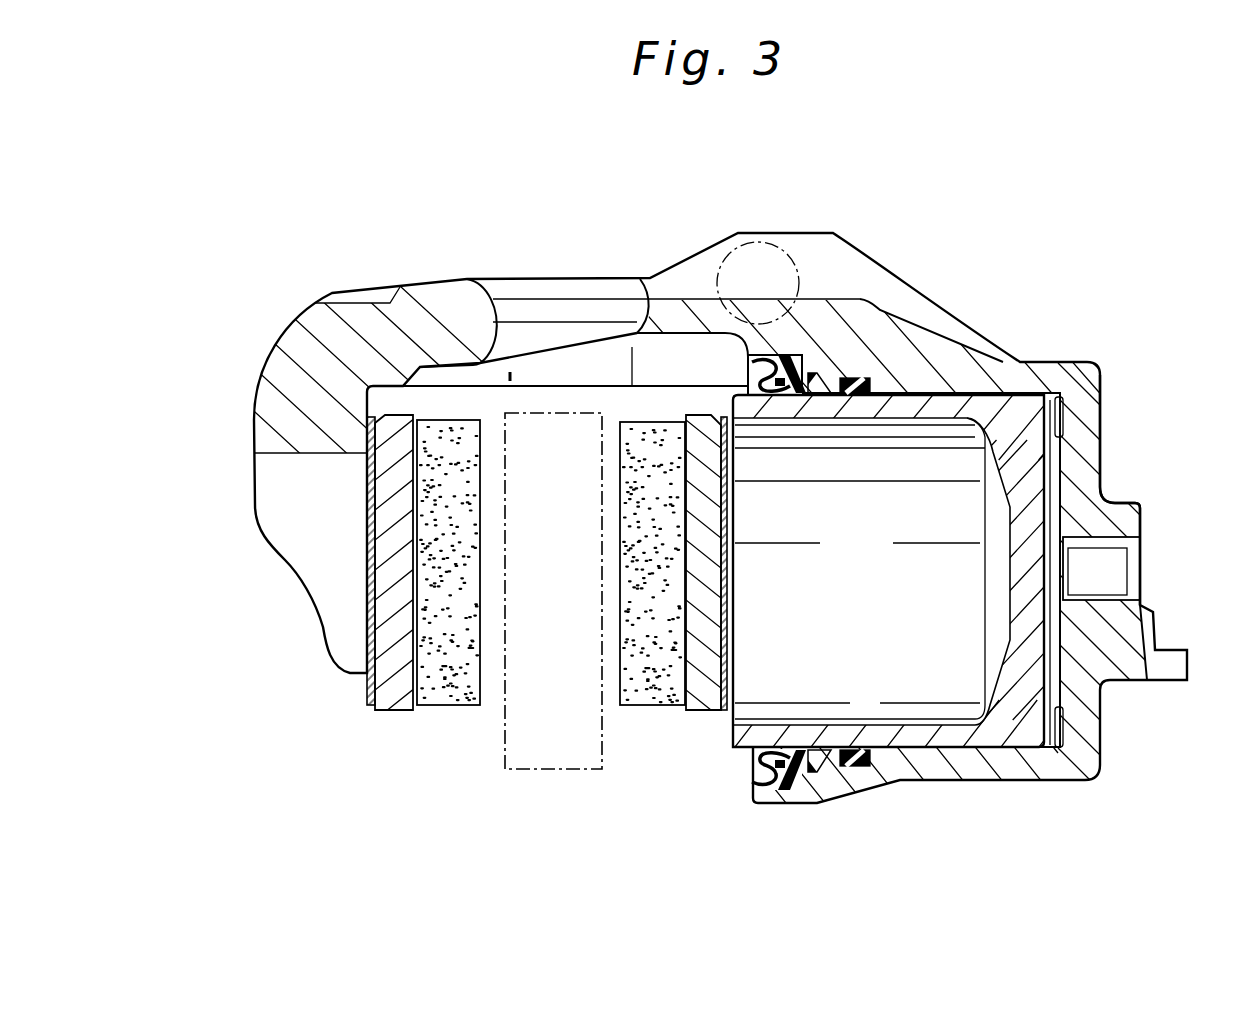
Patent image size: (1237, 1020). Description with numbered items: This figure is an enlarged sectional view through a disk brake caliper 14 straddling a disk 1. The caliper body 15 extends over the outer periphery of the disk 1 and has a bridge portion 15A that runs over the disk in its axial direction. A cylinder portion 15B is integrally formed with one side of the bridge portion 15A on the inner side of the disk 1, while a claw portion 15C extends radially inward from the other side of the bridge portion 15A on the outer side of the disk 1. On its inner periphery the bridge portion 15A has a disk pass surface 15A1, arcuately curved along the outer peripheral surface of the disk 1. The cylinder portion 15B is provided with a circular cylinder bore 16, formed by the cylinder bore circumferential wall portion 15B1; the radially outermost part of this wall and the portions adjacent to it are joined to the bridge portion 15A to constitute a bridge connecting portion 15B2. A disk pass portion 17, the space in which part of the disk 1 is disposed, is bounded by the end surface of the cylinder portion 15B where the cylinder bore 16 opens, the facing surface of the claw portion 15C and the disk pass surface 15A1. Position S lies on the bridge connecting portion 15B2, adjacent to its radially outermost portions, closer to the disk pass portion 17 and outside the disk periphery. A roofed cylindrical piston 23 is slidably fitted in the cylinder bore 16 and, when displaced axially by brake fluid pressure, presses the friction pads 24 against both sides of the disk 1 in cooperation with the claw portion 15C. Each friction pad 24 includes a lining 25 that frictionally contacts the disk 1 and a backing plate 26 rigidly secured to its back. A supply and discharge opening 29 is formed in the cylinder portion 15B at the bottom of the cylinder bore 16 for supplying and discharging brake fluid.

The disk 1 is at (545, 770).
The caliper 14 is at (836, 230).
The caliper body 15 is at (757, 232).
The bridge portion 15A is at (648, 300).
The disk pass surface 15A1 is at (445, 383).
The cylinder portion 15B is at (1065, 375).
The cylinder bore circumferential wall portion 15B1 is at (1087, 452).
The bridge connecting portion 15B2 is at (863, 283).
The claw portion 15C is at (275, 522).
The cylinder bore 16 is at (1020, 740).
The disk pass portion 17 is at (537, 405).
The piston 23 is at (928, 750).
The friction pads 24 is at (423, 713).
The lining 25 is at (467, 703).
The backing plate 26 is at (385, 702).
The supply and discharge opening 29 is at (1125, 530).
The position S is at (720, 265).